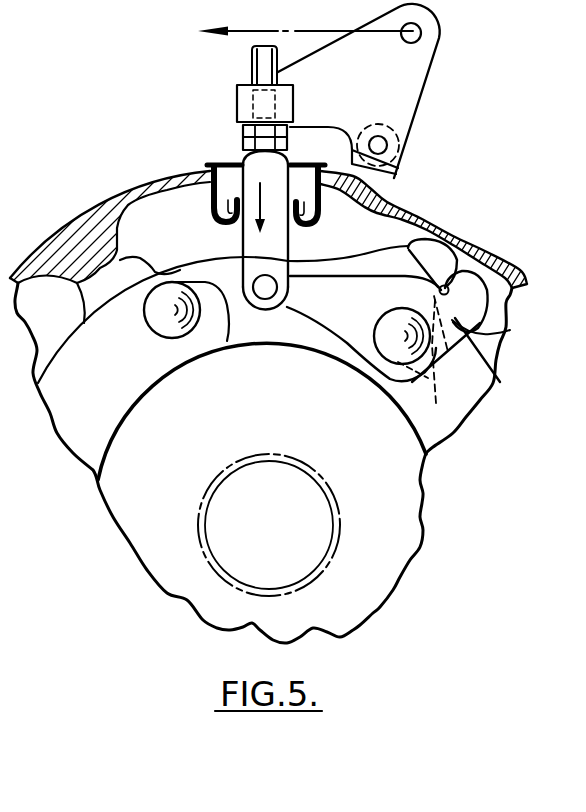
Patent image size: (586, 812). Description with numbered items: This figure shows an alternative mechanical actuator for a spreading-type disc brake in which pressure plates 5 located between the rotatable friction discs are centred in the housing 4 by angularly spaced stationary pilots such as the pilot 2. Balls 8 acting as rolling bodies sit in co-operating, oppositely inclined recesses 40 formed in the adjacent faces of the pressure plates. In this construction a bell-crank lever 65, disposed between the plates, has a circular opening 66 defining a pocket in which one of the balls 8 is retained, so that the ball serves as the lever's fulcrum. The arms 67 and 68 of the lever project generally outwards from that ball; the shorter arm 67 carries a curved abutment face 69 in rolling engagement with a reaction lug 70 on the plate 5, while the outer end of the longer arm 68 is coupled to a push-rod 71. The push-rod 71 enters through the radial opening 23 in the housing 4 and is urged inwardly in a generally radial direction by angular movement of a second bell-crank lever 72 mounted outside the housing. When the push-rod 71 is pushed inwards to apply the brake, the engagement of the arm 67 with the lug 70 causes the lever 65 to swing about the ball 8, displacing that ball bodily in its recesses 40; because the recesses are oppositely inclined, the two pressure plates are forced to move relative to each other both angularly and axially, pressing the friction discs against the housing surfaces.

The stationary pilot 2 is at (88, 240).
The housing 4 is at (143, 196).
The pressure plate 5 is at (385, 263).
The ball 8 is at (178, 320).
The radial opening 23 is at (230, 187).
The recess 40 is at (207, 298).
The bell-crank lever 65 is at (428, 350).
The circular opening 66 is at (402, 366).
The shorter arm 67 is at (510, 330).
The longer arm 68 is at (313, 297).
The curved abutment face 69 is at (463, 280).
The reaction lug 70 is at (437, 258).
The push-rod 71 is at (272, 176).
The second bell-crank lever 72 is at (403, 88).